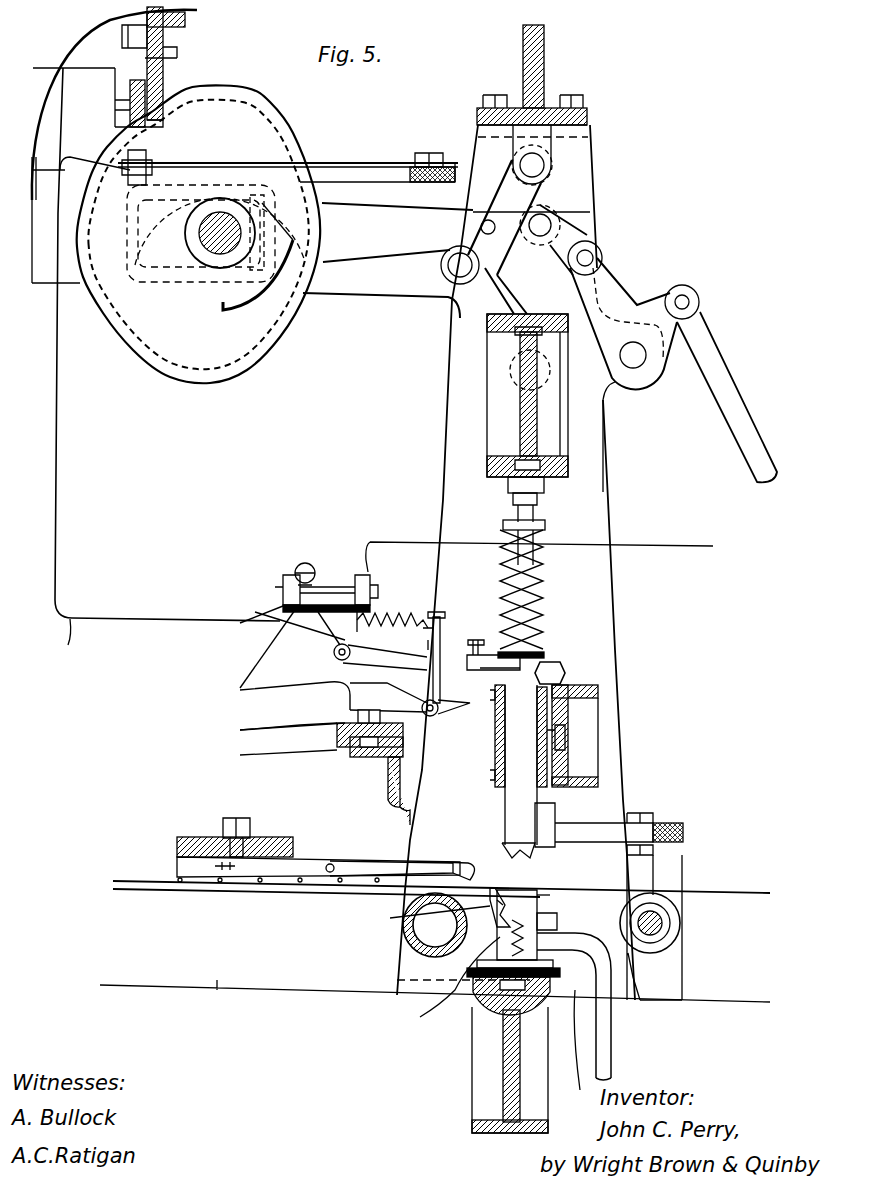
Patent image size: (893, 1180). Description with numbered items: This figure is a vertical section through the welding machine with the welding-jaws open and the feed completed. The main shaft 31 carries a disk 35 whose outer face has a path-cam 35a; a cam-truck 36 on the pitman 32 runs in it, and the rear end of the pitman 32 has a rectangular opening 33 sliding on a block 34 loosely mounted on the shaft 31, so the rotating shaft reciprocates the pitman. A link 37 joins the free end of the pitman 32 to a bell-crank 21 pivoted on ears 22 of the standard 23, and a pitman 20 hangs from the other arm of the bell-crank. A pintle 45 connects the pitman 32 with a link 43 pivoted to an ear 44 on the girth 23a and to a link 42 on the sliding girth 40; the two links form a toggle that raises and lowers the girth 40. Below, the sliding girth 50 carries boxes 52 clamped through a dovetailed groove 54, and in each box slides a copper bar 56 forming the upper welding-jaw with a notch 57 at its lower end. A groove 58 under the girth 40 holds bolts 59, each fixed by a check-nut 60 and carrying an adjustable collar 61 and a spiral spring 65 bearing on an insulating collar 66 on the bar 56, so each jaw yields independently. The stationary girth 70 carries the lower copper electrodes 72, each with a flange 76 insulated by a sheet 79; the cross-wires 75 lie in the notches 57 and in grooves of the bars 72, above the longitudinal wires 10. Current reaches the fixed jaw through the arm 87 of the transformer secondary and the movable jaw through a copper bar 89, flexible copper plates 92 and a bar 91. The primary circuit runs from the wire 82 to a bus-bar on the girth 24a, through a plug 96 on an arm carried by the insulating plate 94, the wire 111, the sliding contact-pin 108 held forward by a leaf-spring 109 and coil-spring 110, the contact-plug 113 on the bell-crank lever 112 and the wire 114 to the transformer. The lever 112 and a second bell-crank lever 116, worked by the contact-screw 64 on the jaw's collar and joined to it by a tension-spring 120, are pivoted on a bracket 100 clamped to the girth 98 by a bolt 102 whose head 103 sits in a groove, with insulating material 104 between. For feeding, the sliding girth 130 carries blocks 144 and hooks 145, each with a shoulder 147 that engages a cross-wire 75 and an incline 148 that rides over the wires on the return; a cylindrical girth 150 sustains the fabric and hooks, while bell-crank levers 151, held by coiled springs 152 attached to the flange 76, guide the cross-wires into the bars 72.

The longitudinal stiffening-wires 10 is at (748, 900).
The pitman 20 is at (728, 390).
The bell-crank 21 is at (630, 313).
The ears 22 is at (612, 388).
The standard 23 is at (615, 690).
The girth 23a is at (546, 65).
The girth 24a is at (163, 18).
The shaft 31 is at (218, 250).
The pitman 32 is at (390, 240).
The rectangular opening 33 is at (165, 268).
The block 34 is at (212, 200).
The disk 35 is at (150, 358).
The path-cam 35a is at (260, 372).
The cam-truck 36 is at (318, 185).
The link 37 is at (603, 232).
The sliding girth 40 is at (492, 405).
The link 42 is at (478, 310).
The complemental link 43 is at (512, 187).
The ear 44 is at (560, 140).
The pintle 45 is at (495, 235).
The sliding girth 50 is at (580, 690).
The boxes 52 is at (495, 750).
The dovetailed groove 54 is at (565, 737).
The copper bar 56 is at (500, 830).
The notch 57 is at (540, 880).
The dovetailed groove 58 is at (500, 472).
The bolts 59 is at (538, 510).
The check-nut 60 is at (548, 484).
The screw-threaded collar 61 is at (545, 525).
The thumb-screw 64 is at (480, 660).
The spiral spring 65 is at (545, 600).
The collar 66 is at (548, 656).
The stationary girth 70 is at (472, 1128).
The copper bars 72 is at (470, 985).
The cross-wires 75 is at (140, 877).
The flange 76 is at (580, 1090).
The sheet of insulating material 79 is at (460, 1015).
The wire 82 is at (45, 68).
The arm 87 is at (613, 1038).
The copper bar 89 is at (686, 860).
The copper bar 91 is at (600, 823).
The copper plates 92 is at (690, 825).
The plate of insulating material 94 is at (403, 182).
The plug 96 is at (160, 108).
The girth 98 is at (385, 790).
The brackets 100 is at (260, 707).
The bolt 102 is at (260, 730).
The head 103 is at (320, 752).
The insulating material 104 is at (337, 742).
The horizontal sliding pin 108 is at (283, 575).
The leaf-spring 109 is at (318, 588).
The coil-spring 110 is at (307, 563).
The wire 111 is at (78, 648).
The bell-crank lever 112 is at (333, 652).
The contact-plug 113 is at (350, 587).
The wire 114 is at (713, 546).
The bell-crank lever 116 is at (330, 683).
The tension-spring 120 is at (395, 618).
The horizontal sliding girth 130 is at (258, 835).
The arm or block 144 is at (355, 862).
The hooks 145 is at (360, 873).
The shoulder 147 is at (440, 862).
The incline 148 is at (518, 888).
The cylindrically-shaped girth 150 is at (405, 978).
The bell-crank levers 151 is at (422, 918).
The coiled spring 152 is at (560, 922).